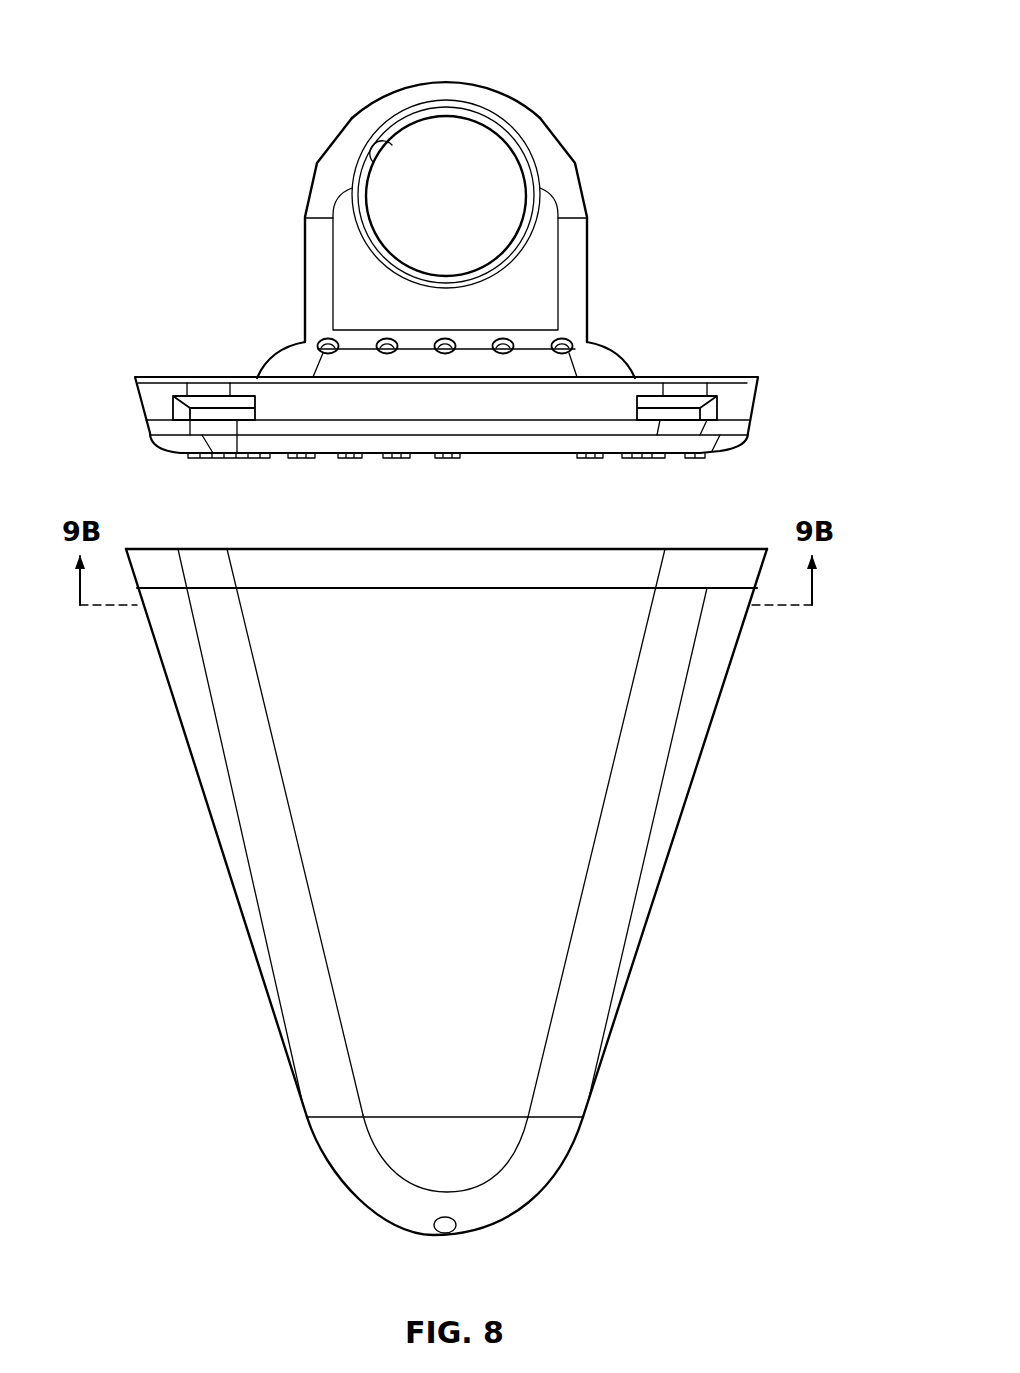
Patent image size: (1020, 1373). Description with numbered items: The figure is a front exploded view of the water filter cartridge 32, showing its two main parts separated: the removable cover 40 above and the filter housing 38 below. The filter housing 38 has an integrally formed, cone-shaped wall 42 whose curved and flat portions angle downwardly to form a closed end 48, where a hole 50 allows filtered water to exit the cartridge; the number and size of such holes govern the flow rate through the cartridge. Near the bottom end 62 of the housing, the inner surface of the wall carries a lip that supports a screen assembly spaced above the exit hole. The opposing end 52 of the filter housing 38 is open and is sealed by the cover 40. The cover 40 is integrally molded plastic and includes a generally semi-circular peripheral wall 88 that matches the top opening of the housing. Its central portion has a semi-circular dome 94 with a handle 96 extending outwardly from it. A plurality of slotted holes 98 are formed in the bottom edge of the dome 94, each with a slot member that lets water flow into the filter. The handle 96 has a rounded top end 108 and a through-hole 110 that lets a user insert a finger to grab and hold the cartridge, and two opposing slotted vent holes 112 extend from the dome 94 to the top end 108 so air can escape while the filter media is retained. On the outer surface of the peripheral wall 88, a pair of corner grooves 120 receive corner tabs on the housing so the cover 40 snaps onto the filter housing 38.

The water filter cartridge 32 is at (790, 50).
The filter housing 38 is at (663, 986).
The removable cover 40 is at (626, 276).
The cone-shaped wall 42 is at (692, 785).
The closed end 48 is at (290, 1181).
The hole 50 is at (457, 1229).
The opposing end 52 is at (690, 518).
The bottom end 62 is at (540, 1177).
The peripheral wall 88 is at (757, 398).
The semi-circular dome 94 is at (283, 363).
The handle 96 is at (498, 92).
The slotted holes 98 is at (337, 351).
The rounded top end 108 is at (437, 82).
The through-hole 110 is at (388, 150).
The slotted vent holes 112 is at (319, 132).
The corner grooves 120 is at (190, 405).